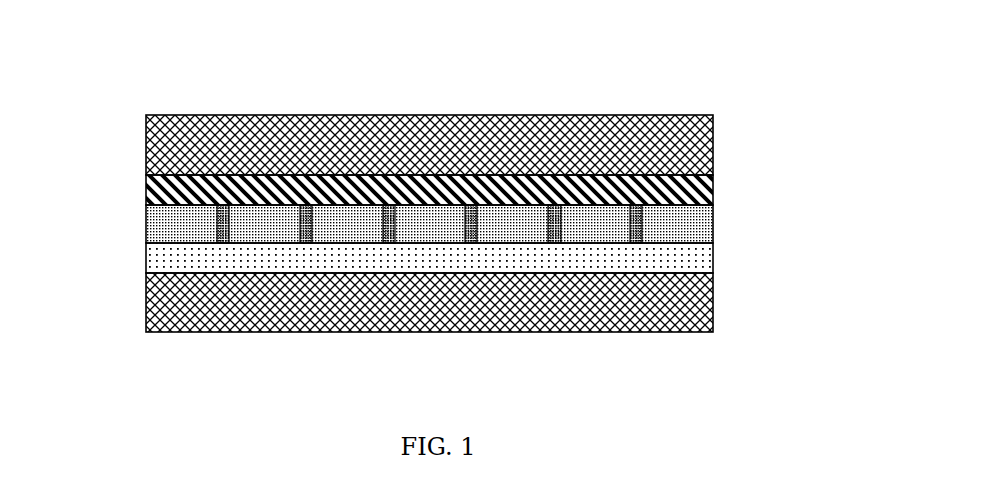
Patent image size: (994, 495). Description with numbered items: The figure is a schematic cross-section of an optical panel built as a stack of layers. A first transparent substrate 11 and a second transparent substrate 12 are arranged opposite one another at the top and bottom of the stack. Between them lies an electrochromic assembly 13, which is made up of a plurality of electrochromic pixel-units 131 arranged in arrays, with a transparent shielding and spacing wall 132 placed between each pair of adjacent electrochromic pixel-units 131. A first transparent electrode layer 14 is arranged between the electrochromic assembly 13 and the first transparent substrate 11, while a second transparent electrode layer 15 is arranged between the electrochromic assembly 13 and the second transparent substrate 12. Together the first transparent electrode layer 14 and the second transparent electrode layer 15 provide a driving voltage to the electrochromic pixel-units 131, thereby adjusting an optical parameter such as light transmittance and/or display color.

The first transparent substrate 11 is at (680, 147).
The second transparent substrate 12 is at (683, 308).
The electrochromic assembly 13 is at (429, 143).
The electrochromic pixel-unit 131 is at (505, 217).
The transparent shielding and spacing wall 132 is at (217, 229).
The first transparent electrode layer 14 is at (412, 187).
The second transparent electrode layer 15 is at (407, 252).